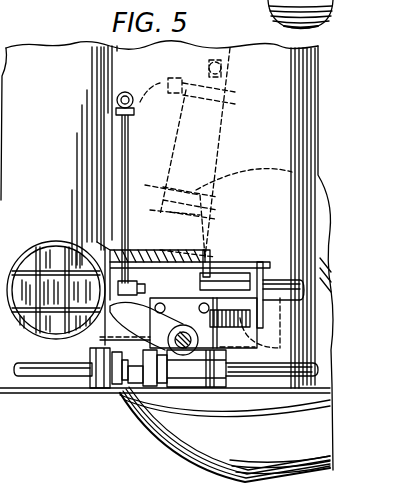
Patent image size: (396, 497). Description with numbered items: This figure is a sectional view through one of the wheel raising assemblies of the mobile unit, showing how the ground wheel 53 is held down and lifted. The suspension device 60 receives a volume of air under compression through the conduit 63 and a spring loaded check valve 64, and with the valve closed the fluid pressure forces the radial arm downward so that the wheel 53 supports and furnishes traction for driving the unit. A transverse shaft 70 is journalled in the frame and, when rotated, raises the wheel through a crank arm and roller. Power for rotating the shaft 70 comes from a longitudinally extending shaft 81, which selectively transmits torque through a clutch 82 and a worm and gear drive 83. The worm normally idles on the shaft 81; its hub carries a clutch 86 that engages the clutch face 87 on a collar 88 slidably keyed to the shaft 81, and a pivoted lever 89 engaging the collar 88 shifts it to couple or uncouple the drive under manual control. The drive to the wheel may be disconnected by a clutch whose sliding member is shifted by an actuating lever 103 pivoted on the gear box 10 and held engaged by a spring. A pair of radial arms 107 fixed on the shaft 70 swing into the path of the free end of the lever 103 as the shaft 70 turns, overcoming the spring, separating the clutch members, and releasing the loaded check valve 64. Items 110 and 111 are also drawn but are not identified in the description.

The gear box 10 is at (50, 241).
The wheel 53 is at (227, 483).
The suspension device 60 is at (231, 125).
The conduit 63 is at (132, 163).
The spring loaded check valve 64 is at (143, 214).
The shaft 70 is at (182, 349).
The shaft 81 is at (35, 377).
The clutch 82 is at (127, 390).
The worm and gear drive 83 is at (201, 393).
The clutch 86 is at (128, 388).
The clutch face 87 is at (120, 390).
The collar 88 is at (90, 387).
The pivoted lever 89 is at (107, 383).
The actuating lever 103 is at (260, 268).
The radial arm 107 is at (88, 348).
The shaft 110 is at (213, 287).
The pin 111 is at (203, 248).